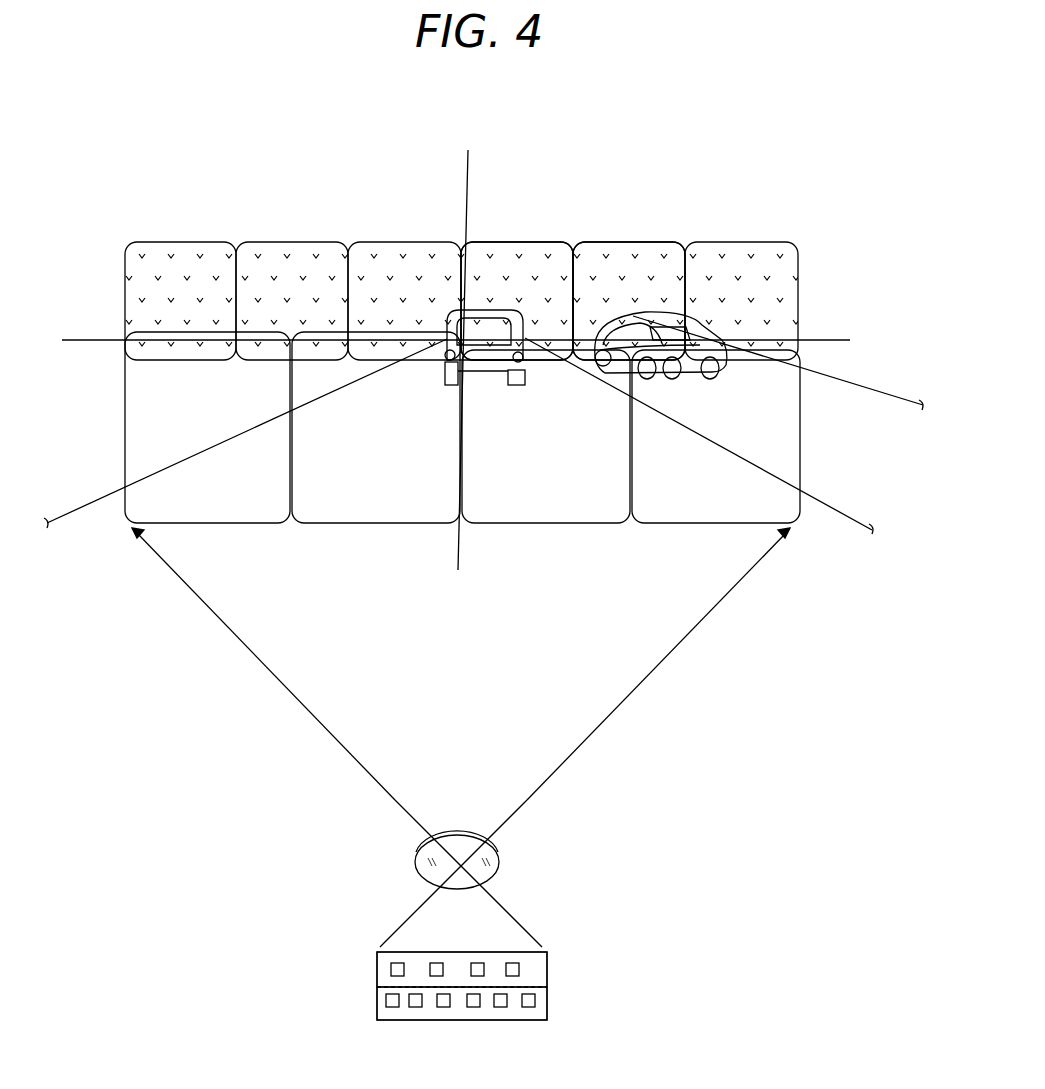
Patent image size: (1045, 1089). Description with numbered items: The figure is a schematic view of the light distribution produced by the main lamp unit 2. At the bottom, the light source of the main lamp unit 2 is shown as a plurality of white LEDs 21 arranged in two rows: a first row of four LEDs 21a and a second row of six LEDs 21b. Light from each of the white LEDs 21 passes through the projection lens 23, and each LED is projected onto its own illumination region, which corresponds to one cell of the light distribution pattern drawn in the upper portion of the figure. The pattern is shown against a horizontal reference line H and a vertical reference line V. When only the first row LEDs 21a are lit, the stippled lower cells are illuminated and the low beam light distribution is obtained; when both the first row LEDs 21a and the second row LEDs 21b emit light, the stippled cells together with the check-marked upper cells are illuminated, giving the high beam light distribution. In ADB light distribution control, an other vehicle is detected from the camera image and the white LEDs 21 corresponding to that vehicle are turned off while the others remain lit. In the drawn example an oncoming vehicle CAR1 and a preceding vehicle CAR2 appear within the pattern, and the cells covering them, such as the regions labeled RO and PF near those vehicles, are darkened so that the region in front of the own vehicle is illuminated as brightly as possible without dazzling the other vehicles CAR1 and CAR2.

The main lamp unit 2 is at (628, 911).
The white LEDs 21 is at (549, 996).
The first row LEDs 21a is at (125, 406).
The second row LEDs 21b is at (125, 300).
The projection lens 23 is at (500, 866).
The oncoming vehicle CAR1 is at (698, 303).
The preceding vehicle CAR2 is at (450, 320).
The pedestrian/object region PF is at (518, 242).
The road object region RO is at (688, 246).
The horizontal axis H is at (470, 340).
The vertical axis V is at (467, 342).